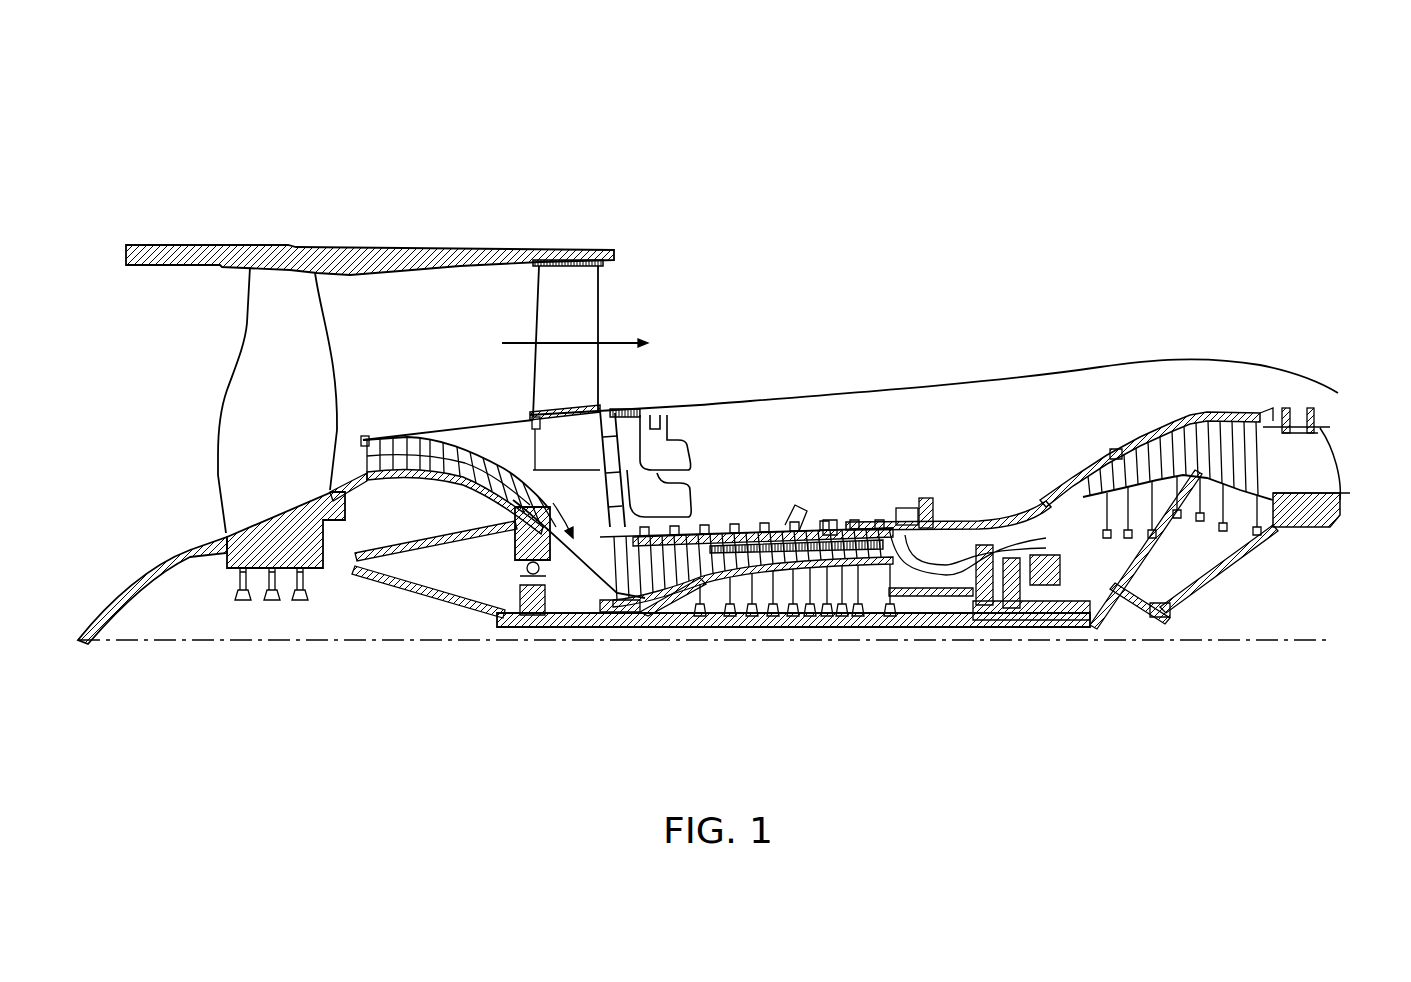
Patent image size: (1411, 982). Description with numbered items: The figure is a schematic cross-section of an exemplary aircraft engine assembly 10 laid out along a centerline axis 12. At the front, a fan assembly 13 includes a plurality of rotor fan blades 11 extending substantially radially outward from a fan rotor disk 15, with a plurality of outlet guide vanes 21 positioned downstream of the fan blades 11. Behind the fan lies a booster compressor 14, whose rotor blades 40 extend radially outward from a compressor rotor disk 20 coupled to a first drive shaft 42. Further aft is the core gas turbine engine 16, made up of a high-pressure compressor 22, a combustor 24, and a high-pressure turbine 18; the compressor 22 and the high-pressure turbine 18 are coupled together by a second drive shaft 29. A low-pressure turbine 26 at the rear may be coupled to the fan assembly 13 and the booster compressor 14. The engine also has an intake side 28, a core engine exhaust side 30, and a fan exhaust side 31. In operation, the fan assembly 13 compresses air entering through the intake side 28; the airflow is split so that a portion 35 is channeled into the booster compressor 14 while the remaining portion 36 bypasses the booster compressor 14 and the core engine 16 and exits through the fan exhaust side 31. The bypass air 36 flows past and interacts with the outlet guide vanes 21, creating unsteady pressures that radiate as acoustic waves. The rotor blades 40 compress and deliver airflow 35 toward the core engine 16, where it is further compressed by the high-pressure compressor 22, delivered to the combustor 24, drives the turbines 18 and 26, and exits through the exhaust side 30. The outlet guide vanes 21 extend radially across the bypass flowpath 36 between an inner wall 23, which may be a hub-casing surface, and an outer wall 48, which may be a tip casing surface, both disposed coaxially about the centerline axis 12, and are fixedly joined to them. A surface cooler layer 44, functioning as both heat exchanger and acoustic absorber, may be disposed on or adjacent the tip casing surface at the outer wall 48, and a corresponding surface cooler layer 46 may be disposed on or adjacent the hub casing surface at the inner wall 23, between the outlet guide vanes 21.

The aircraft engine assembly 10 is at (1283, 112).
The rotor fan blades 11 is at (308, 338).
The centerline axis 12 is at (270, 640).
The fan assembly 13 is at (213, 380).
The booster compressor 14 is at (418, 440).
The fan rotor disk 15 is at (227, 568).
The core gas turbine engine 16 is at (882, 447).
The high-pressure turbine 18 is at (985, 625).
The compressor rotor disk 20 is at (388, 480).
The outlet guide vanes 21 is at (592, 381).
The high-pressure compressor 22 is at (663, 547).
The inner wall 23 is at (775, 393).
The combustor 24 is at (943, 541).
The low-pressure turbine 26 is at (1237, 410).
The intake side 28 is at (125, 302).
The second drive shaft 29 is at (912, 628).
The core engine exhaust side 30 is at (1343, 430).
The fan exhaust side 31 is at (612, 278).
The portion of airflow 35 is at (560, 512).
The bypass airflow 36 is at (517, 340).
The rotor blades 40 is at (395, 440).
The first drive shaft 42 is at (528, 626).
The surface cooler layer 44 is at (550, 263).
The surface cooler layer 46 is at (555, 408).
The outer wall 48 is at (200, 245).